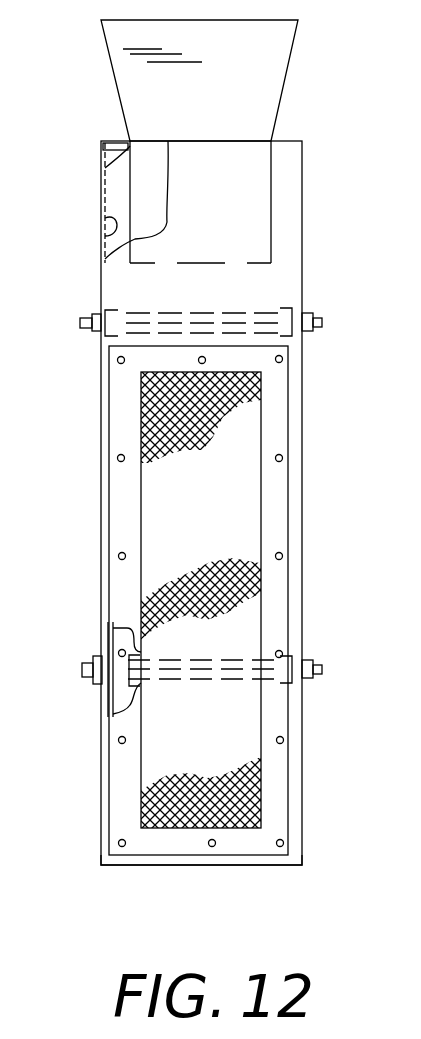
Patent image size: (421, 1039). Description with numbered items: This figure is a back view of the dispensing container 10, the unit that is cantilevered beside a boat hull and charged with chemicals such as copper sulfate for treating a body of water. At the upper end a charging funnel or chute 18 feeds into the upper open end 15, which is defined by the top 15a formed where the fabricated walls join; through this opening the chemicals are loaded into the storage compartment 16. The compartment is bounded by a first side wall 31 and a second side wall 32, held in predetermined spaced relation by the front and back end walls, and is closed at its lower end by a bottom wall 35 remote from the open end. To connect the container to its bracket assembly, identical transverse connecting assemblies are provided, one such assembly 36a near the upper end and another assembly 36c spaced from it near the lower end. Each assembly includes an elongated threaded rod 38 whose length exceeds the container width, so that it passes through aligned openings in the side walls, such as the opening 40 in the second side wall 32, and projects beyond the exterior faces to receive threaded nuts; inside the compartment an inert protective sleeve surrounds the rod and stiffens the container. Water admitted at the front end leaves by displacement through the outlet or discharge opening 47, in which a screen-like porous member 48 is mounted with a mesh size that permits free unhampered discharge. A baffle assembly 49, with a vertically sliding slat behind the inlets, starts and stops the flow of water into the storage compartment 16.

The dispensing container 10 is at (92, 357).
The charging funnel or chute 18 is at (272, 84).
The upper open end 15 is at (117, 141).
The top 15a is at (104, 164).
The second side wall 32 is at (103, 207).
The storage compartment 16 is at (103, 222).
The transverse connecting assembly 36a is at (275, 308).
The elongated threaded rod 38 is at (320, 318).
The first side wall 31 is at (297, 733).
The outlet or discharge opening 47 is at (260, 432).
The porous member 48 is at (220, 597).
The baffle assembly 49 is at (238, 678).
The transverse connecting assembly 36c is at (268, 650).
The transverse connecting assembly opening 40 is at (107, 634).
The bottom wall 35 is at (278, 858).